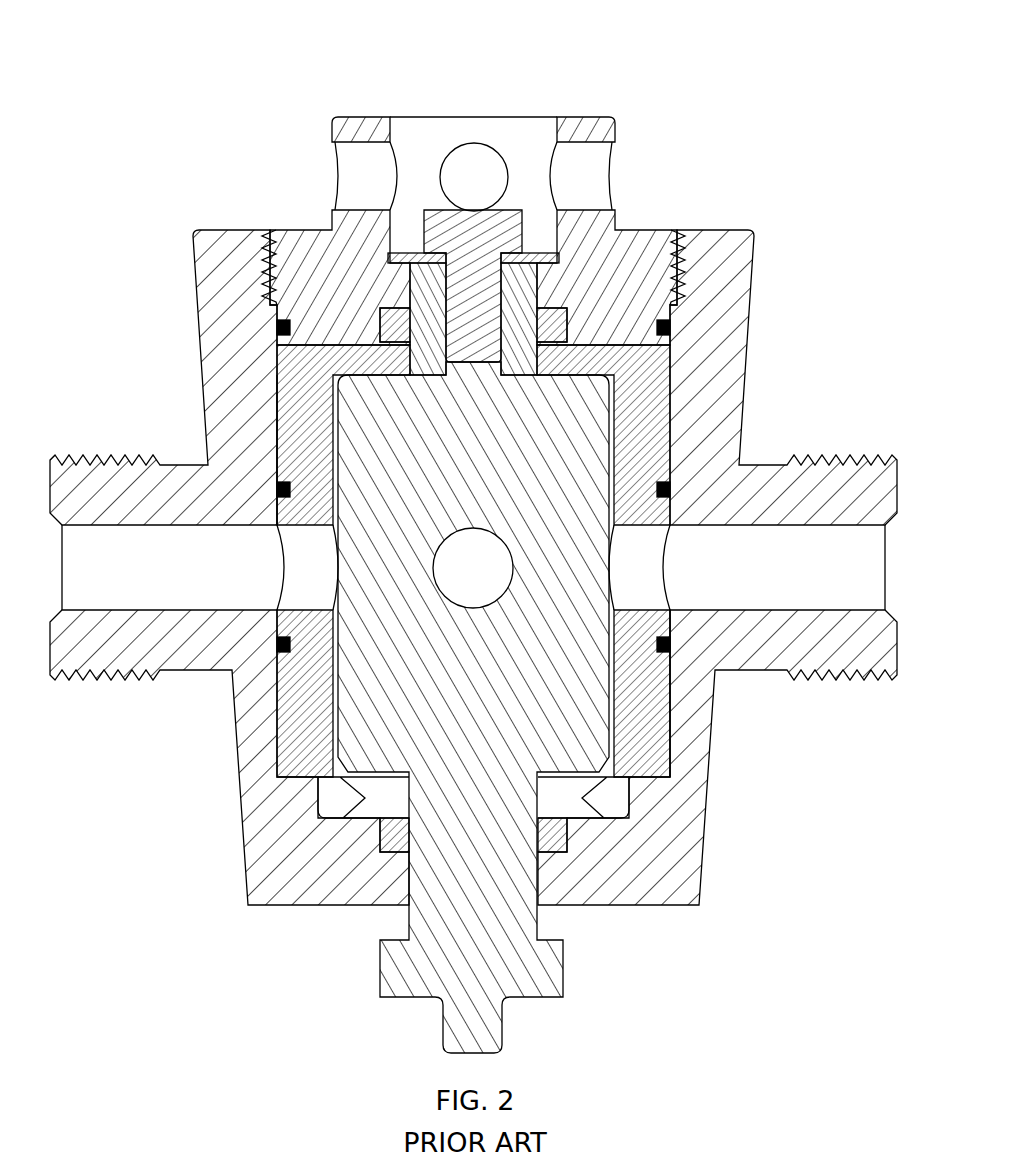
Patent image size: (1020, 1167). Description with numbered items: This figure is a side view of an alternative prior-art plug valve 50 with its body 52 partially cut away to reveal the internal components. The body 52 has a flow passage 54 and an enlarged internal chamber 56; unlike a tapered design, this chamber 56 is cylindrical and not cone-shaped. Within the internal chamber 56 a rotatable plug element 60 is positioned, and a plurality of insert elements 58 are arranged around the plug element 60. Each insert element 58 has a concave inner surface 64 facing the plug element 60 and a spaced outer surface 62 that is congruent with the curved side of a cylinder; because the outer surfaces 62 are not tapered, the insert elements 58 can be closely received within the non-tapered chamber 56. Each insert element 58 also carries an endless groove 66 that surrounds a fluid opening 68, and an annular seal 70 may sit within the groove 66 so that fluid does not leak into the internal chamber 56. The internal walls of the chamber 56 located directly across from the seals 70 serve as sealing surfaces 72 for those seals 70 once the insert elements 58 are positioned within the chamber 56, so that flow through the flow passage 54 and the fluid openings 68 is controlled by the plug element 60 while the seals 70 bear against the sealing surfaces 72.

The plug valve 50 is at (498, 68).
The body 52 is at (575, 407).
The flow passage 54 is at (213, 565).
The internal chamber 56 is at (339, 797).
The insert elements 58 is at (317, 750).
The rotatable plug element 60 is at (668, 335).
The outer surfaces 62 is at (277, 423).
The concave inner surface 64 is at (248, 905).
The endless groove 66 is at (278, 327).
The fluid opening 68 is at (323, 567).
The annular seal 70 is at (278, 489).
The sealing surfaces 72 is at (278, 645).